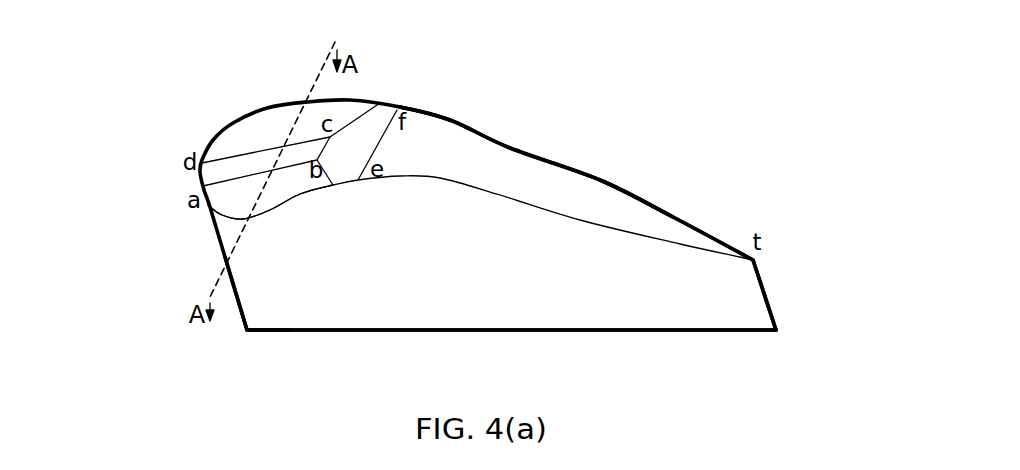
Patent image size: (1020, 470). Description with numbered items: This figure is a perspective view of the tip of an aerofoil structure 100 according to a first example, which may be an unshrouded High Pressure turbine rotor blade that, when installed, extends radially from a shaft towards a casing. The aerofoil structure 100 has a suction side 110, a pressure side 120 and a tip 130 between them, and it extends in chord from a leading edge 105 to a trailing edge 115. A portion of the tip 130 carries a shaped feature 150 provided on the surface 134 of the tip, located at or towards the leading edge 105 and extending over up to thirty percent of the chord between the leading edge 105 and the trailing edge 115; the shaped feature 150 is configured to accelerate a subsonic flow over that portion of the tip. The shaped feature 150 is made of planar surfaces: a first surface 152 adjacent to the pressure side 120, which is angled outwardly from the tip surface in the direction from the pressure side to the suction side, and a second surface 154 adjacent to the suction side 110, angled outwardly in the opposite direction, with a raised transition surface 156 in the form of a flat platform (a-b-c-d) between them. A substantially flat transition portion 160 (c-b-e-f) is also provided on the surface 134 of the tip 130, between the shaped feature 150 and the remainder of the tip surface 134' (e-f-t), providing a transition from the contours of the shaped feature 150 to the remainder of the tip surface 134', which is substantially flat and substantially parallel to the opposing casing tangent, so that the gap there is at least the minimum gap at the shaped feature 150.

The aerofoil structure 100 is at (548, 58).
The leading edge 105 is at (243, 322).
The suction side 110 is at (690, 227).
The trailing edge 115 is at (760, 277).
The pressure side 120 is at (680, 318).
The tip 130 is at (507, 153).
The surface of the tip 134 is at (449, 104).
The remainder of the tip surface 134' is at (638, 181).
The shaped feature 150 is at (202, 176).
The first surface 152 is at (236, 198).
The second surface 154 is at (228, 148).
The transition surface 156 is at (210, 176).
The transition portion 160 is at (380, 103).